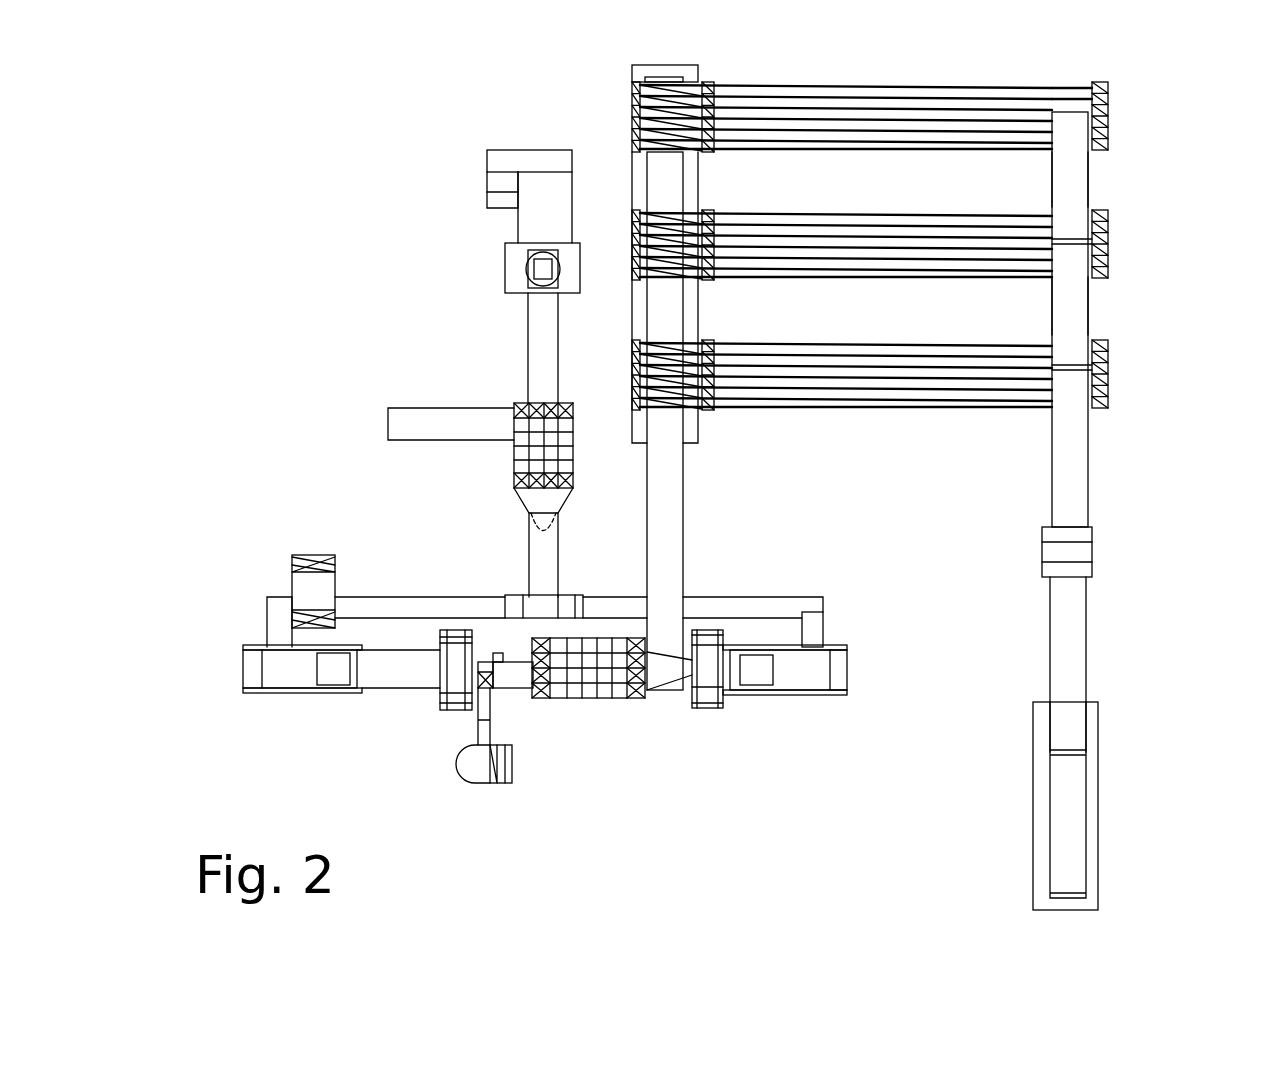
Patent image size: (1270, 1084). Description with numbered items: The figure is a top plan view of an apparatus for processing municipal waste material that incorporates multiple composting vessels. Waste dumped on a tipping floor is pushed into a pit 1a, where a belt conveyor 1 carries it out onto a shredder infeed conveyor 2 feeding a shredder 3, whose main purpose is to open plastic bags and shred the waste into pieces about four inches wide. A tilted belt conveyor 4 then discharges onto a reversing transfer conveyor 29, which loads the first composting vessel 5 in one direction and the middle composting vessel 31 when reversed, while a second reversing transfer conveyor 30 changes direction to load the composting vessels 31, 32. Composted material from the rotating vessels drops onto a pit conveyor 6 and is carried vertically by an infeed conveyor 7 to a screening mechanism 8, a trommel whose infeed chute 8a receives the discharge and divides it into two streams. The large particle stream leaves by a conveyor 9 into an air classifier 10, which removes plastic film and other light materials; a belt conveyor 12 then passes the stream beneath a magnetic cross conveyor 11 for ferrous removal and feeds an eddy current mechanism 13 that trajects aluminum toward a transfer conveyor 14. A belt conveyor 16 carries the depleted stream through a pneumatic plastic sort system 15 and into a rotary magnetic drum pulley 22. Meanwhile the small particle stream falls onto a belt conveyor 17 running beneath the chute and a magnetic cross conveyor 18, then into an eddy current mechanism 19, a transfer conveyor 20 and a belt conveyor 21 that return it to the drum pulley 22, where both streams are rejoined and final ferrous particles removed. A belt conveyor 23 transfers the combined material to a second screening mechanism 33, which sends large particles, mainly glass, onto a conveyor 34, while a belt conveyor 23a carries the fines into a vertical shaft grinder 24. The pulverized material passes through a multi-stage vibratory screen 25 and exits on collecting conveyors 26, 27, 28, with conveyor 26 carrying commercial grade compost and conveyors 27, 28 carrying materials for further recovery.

The belt conveyor 1 is at (1085, 828).
The pit 1a is at (1098, 795).
The shredder infeed conveyor 2 is at (1086, 655).
The shredder 3 is at (1092, 553).
The belt conveyor 4 is at (1088, 460).
The first composting vessel 5 is at (950, 412).
The pit conveyor 6 is at (632, 120).
The infeed conveyor 7 is at (685, 525).
The screening mechanism 8 is at (628, 698).
The infeed chute 8a is at (652, 700).
The conveyor 9 is at (510, 690).
The air classifier 10 is at (497, 783).
The magnetic cross conveyor 11 is at (440, 705).
The belt conveyor 12 is at (385, 692).
The eddy current mechanism 13 is at (255, 695).
The transfer conveyor 14 is at (267, 617).
The pneumatic plastic sort system 15 is at (318, 555).
The belt conveyor 16 is at (408, 597).
The belt conveyor 17 is at (685, 705).
The magnetic cross conveyor 18 is at (718, 710).
The eddy current mechanism 19 is at (830, 695).
The transfer conveyor 20 is at (823, 625).
The belt conveyor 21 is at (762, 597).
The rotary magnetic drum pulley 22 is at (550, 597).
The belt conveyor 23 is at (527, 545).
The belt conveyor 23a is at (535, 330).
The vertical shaft grinder 24 is at (528, 270).
The multi-stage vibratory screen 25 is at (518, 222).
The conveyor 26 is at (495, 205).
The conveyor 27 is at (495, 183).
The conveyor 28 is at (487, 160).
The reversing transfer conveyor 29 is at (1082, 297).
The second reversing transfer conveyor 30 is at (1080, 185).
The composting vessel 31 is at (925, 280).
The composting vessel 32 is at (960, 152).
The second screening mechanism 33 is at (514, 478).
The conveyor 34 is at (388, 430).